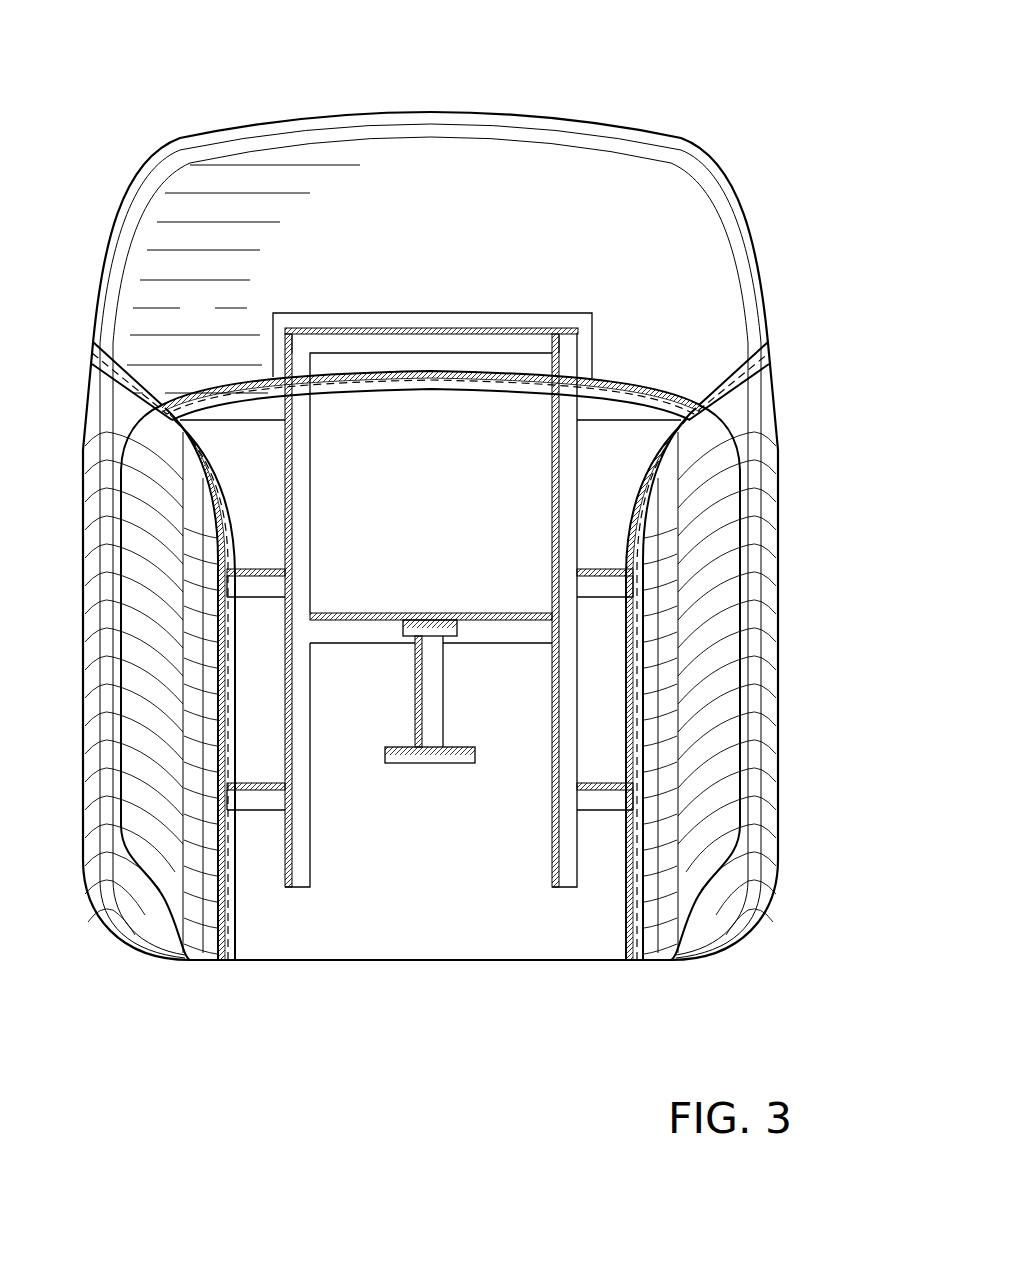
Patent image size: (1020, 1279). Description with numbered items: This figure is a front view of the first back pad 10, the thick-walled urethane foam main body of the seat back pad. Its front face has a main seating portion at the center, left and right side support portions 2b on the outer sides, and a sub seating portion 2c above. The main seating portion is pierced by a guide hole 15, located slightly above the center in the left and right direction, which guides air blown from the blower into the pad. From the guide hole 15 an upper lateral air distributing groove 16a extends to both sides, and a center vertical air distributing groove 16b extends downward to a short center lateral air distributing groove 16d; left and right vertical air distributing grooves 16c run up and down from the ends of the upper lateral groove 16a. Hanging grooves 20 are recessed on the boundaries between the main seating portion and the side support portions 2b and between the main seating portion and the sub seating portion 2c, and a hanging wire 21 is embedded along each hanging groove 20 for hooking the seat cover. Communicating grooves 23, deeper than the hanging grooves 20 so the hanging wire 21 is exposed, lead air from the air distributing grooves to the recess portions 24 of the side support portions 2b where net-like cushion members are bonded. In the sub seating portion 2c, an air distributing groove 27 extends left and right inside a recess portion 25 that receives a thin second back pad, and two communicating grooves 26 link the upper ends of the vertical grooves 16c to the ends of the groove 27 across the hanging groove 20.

The first back pad 10 is at (597, 108).
The side support portion 2b is at (431, 674).
The sub seating portion 2c is at (306, 269).
The guide hole 15 is at (432, 620).
The upper lateral air distributing groove 16a is at (372, 615).
The center vertical air distributing groove 16b is at (440, 698).
The left and right vertical air distributing grooves 16c is at (305, 520).
The center lateral air distributing groove 16d is at (405, 762).
The hanging groove 20 is at (403, 384).
The hanging wire 21 is at (540, 385).
The communicating groove 23 is at (261, 568).
The recess portion 24 is at (145, 735).
The recess portion 25 is at (345, 325).
The communicating groove 26 is at (297, 360).
The air distributing groove 27 is at (503, 338).